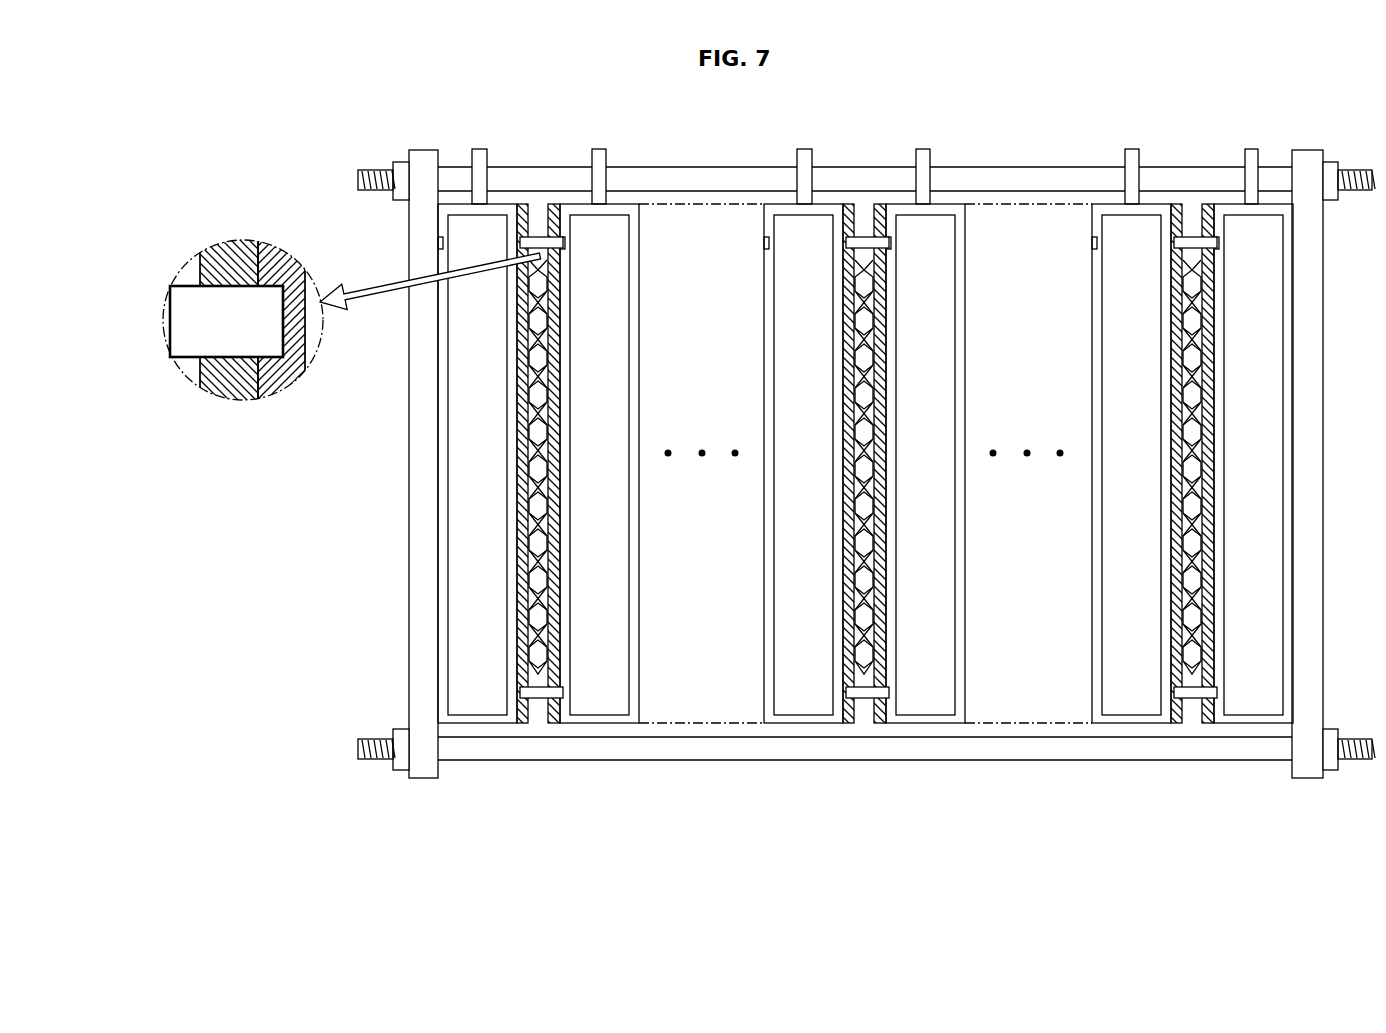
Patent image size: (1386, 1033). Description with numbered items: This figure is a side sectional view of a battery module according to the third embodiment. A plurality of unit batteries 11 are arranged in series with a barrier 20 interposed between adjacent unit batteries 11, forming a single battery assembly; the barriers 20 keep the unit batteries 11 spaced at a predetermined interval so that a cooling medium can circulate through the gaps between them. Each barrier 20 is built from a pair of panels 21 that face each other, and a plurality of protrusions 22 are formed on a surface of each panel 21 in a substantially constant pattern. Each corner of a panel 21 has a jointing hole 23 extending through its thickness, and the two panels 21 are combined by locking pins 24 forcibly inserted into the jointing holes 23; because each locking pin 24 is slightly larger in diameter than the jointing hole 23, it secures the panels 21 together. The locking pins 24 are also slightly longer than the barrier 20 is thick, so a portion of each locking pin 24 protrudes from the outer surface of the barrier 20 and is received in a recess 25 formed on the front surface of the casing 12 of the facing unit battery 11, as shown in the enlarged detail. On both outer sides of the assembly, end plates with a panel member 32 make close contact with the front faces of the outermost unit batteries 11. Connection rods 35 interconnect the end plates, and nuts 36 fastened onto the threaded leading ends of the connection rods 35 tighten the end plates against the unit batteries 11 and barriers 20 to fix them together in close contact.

The unit battery 11 is at (865, 508).
The casing 12 is at (300, 335).
The barrier 20 is at (675, 462).
The panel 21 is at (530, 428).
The protrusion 22 is at (532, 412).
The jointing hole 23 is at (520, 243).
The locking pin 24 is at (545, 237).
The recess 25 is at (318, 289).
The panel member 32 is at (410, 346).
The connection rod 35 is at (730, 167).
The nut 36 is at (400, 162).